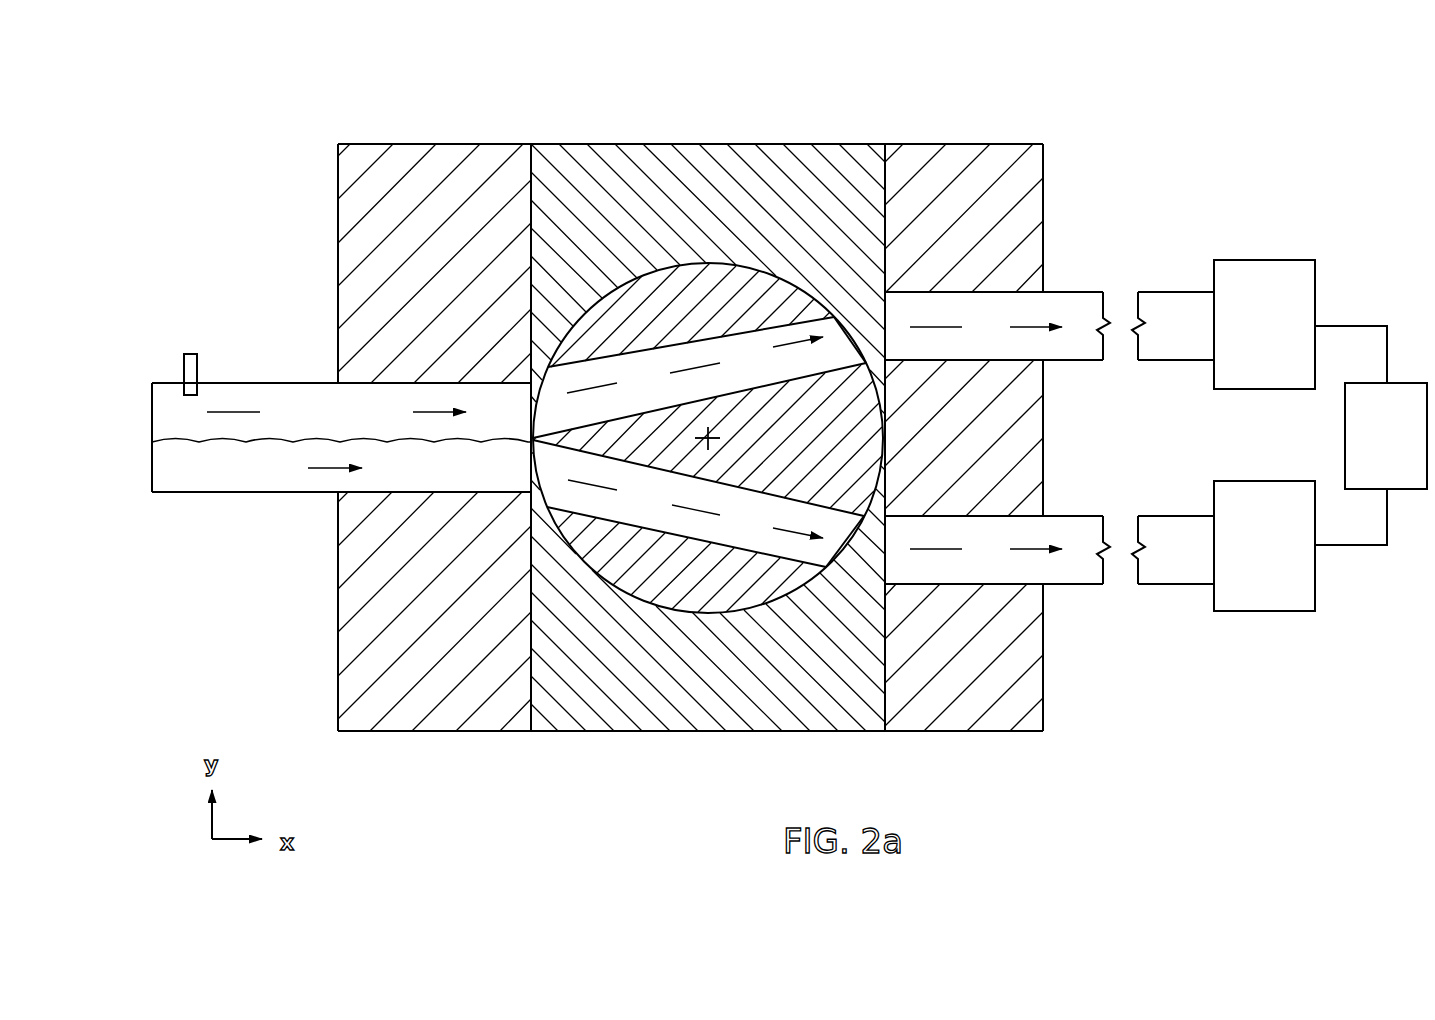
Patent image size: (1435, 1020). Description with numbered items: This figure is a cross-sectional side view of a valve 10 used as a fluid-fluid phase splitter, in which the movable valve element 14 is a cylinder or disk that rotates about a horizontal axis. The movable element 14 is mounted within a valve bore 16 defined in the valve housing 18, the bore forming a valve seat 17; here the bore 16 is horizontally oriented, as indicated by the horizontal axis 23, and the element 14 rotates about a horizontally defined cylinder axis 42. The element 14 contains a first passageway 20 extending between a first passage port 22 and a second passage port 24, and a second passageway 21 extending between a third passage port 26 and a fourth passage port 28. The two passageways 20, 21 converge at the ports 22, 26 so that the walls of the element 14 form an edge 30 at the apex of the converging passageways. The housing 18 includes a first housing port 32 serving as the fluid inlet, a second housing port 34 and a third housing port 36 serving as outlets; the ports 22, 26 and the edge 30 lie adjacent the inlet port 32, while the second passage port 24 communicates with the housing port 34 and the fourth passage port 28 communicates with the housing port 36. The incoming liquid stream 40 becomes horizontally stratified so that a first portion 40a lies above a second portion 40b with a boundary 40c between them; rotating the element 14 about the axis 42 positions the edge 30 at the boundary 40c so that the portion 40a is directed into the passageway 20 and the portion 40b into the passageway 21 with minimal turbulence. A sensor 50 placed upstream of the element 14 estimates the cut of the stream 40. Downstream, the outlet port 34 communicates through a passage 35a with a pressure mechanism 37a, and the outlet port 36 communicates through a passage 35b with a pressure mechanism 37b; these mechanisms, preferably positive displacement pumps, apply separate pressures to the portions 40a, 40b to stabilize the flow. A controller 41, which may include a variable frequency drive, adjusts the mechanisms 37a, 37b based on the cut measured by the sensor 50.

The valve 10 is at (1085, 70).
The movable valve element 14 is at (657, 265).
The valve bore 16 is at (786, 291).
The valve seat 17 is at (740, 144).
The valve housing 18 is at (338, 652).
The first passageway 20 is at (743, 353).
The second passageway 21 is at (650, 497).
The first passage port 22 is at (518, 400).
The horizontal axis 23 is at (708, 438).
The cylinder axis 42 is at (924, 425).
The second passage port 24 is at (840, 340).
The third passage port 26 is at (518, 492).
The fourth passage port 28 is at (833, 547).
The edge 30 is at (515, 494).
The first housing port 32 is at (482, 383).
The second housing port 34 is at (1043, 227).
The passage 35a is at (1068, 292).
The passage 35b is at (1067, 586).
The third housing port 36 is at (895, 553).
The pressure mechanism 37a is at (1262, 260).
The pressure mechanism 37b is at (1268, 611).
The liquid stream 40 is at (178, 445).
The first portion of the liquid 40a is at (305, 402).
The second portion of the liquid 40b is at (197, 470).
The boundary 40c is at (300, 441).
The controller 41 is at (1345, 443).
The sensor 50 is at (190, 353).